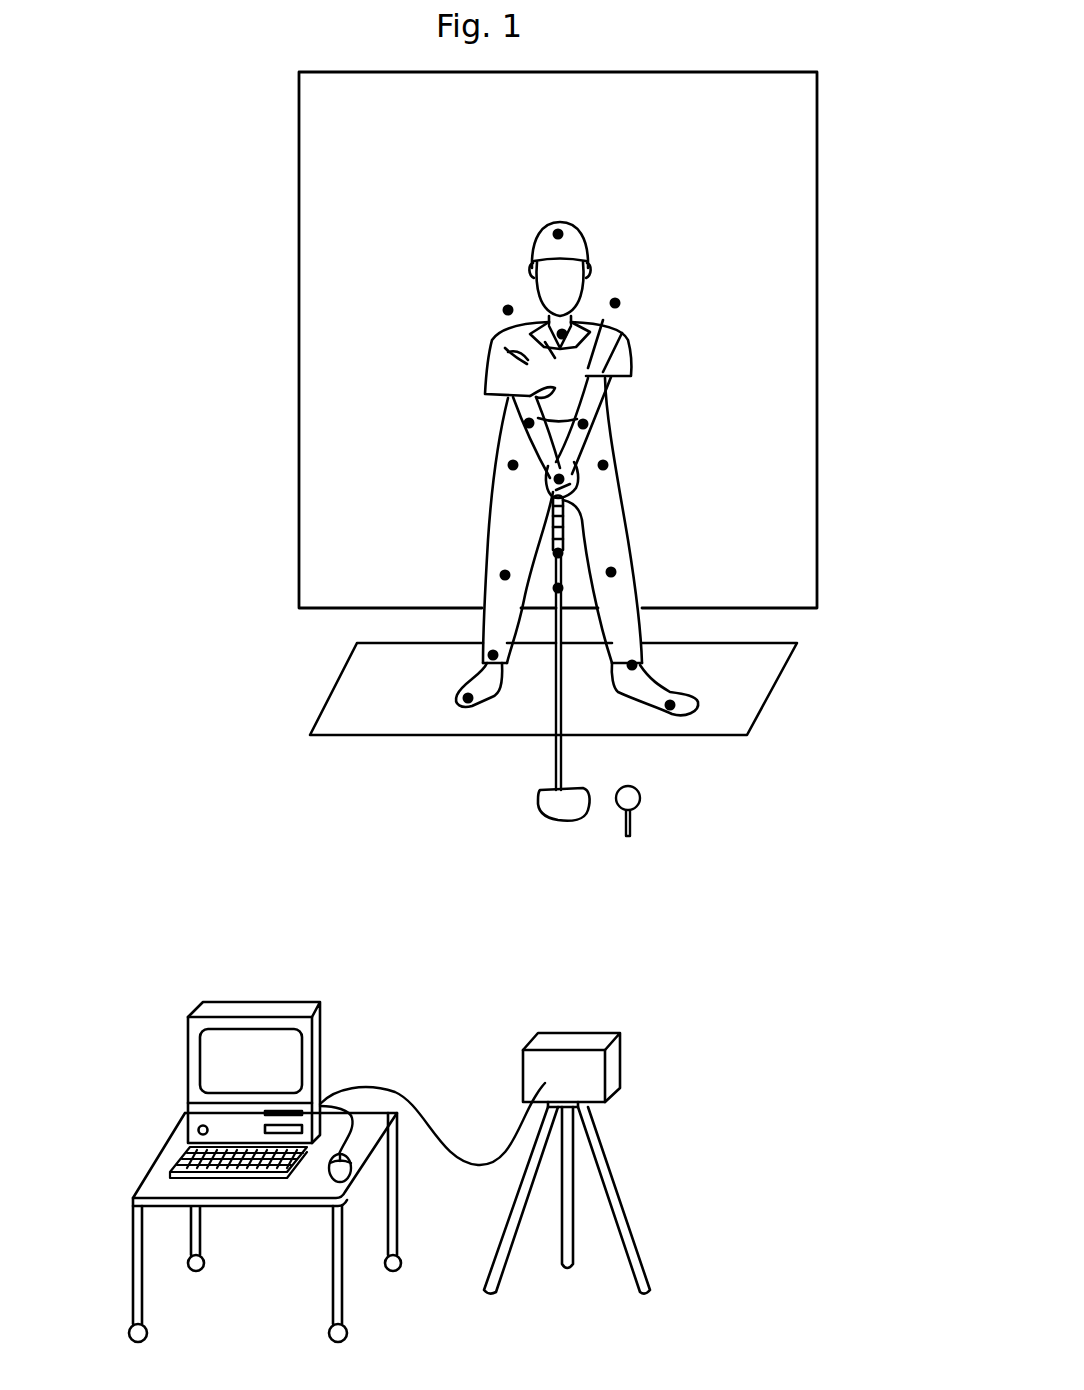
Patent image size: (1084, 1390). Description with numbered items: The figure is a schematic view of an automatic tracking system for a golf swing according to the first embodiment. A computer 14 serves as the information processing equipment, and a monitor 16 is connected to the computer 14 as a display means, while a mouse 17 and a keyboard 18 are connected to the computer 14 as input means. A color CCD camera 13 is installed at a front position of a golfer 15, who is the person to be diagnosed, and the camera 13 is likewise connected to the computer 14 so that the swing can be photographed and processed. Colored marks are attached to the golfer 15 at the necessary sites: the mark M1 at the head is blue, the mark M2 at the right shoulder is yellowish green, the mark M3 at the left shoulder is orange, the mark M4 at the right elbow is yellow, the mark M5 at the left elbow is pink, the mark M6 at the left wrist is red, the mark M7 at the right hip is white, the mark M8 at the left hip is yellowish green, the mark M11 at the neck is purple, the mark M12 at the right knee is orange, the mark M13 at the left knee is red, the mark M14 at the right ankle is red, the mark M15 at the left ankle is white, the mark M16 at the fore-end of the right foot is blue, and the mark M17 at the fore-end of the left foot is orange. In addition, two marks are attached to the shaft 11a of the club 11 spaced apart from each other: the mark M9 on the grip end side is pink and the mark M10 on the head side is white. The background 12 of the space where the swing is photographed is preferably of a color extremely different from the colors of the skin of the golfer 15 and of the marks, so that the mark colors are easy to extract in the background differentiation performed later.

The club 11 is at (502, 674).
The shaft 11a is at (556, 688).
The background 12 is at (776, 237).
The color CCD camera 13 is at (618, 1066).
The computer 14 is at (214, 1108).
The golfer 15 is at (497, 280).
The monitor 16 is at (240, 1015).
The mouse 17 is at (330, 1180).
The keyboard 18 is at (228, 1176).
The mark M1 is at (558, 228).
The mark M2 is at (504, 309).
The mark M3 is at (619, 303).
The mark M4 is at (525, 423).
The mark M5 is at (587, 423).
The mark M6 is at (563, 478).
The mark M7 is at (510, 465).
The mark M8 is at (607, 465).
The mark M9 is at (561, 552).
The mark M10 is at (561, 588).
The mark M11 is at (565, 331).
The mark M12 is at (502, 575).
The mark M13 is at (615, 572).
The mark M14 is at (490, 655).
The mark M15 is at (636, 665).
The mark M16 is at (465, 697).
The mark M17 is at (674, 705).